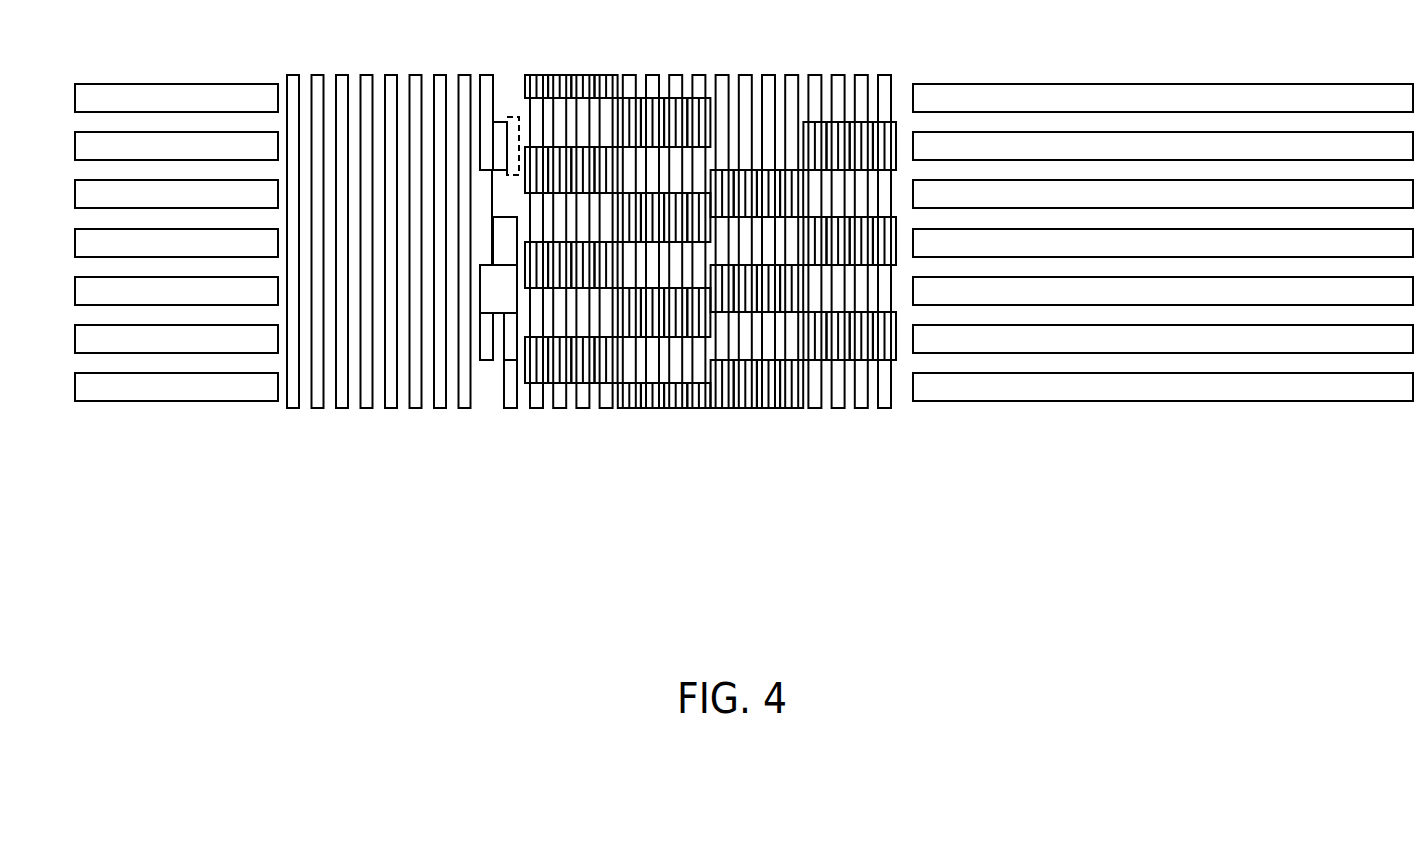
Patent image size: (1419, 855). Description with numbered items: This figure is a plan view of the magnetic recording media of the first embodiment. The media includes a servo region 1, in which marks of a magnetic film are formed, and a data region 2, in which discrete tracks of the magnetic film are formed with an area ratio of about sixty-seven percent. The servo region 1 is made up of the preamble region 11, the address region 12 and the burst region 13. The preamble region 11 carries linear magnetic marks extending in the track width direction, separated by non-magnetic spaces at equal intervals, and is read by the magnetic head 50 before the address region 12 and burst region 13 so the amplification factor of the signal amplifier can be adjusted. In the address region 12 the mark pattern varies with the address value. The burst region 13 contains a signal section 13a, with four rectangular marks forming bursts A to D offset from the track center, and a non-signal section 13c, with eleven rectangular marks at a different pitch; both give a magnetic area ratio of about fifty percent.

The servo region 1 is at (589, 339).
The data region 2 is at (75, 446).
The preamble region 11 is at (470, 446).
The address region 12 is at (470, 446).
The burst region 13 is at (710, 265).
The signal section 13a is at (570, 120).
The non-signal section 13c is at (660, 121).
The magnetic head 50 is at (517, 116).